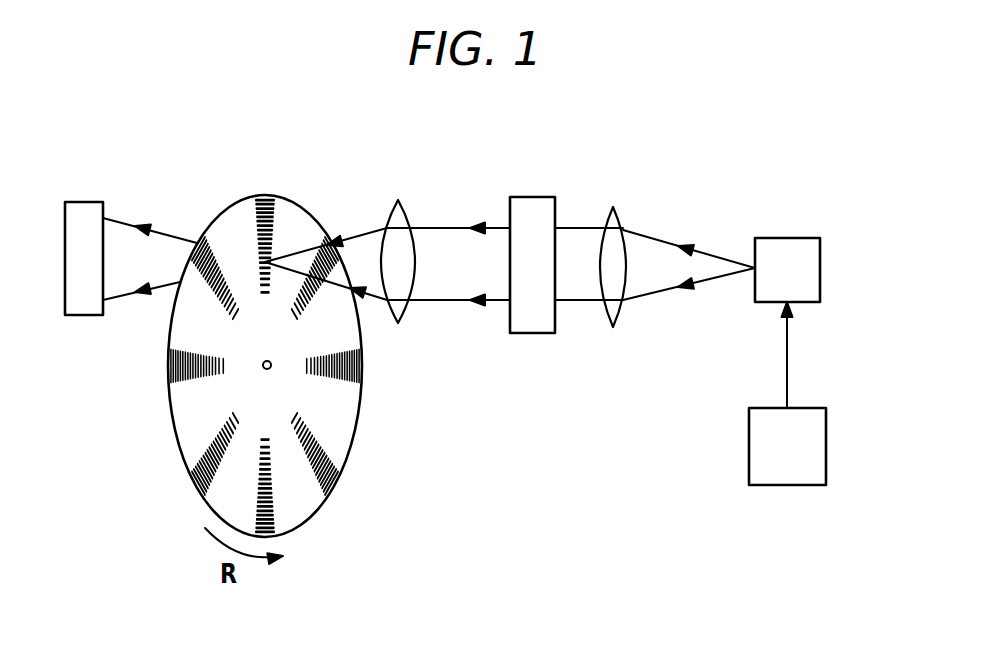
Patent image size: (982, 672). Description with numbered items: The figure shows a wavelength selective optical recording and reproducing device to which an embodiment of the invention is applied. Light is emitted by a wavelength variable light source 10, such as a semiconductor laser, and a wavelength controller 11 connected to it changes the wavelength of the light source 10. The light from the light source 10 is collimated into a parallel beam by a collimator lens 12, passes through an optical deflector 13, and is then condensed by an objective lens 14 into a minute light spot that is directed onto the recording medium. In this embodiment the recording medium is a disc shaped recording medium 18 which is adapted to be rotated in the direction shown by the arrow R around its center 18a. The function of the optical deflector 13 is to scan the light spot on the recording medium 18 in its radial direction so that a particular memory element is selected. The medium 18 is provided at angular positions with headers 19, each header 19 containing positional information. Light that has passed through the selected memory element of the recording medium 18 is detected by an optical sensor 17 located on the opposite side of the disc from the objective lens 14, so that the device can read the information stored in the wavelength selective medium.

The wavelength variable light source 10 is at (821, 264).
The wavelength controller 11 is at (827, 427).
The collimator lens 12 is at (623, 229).
The optical deflector 13 is at (560, 213).
The objective lens 14 is at (405, 218).
The optical sensor 17 is at (103, 206).
The disc shaped recording medium 18 is at (313, 513).
The center 18a is at (263, 366).
The header 19 is at (266, 262).